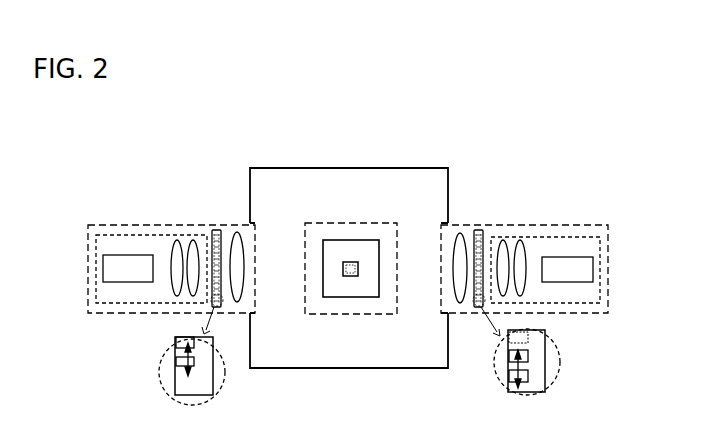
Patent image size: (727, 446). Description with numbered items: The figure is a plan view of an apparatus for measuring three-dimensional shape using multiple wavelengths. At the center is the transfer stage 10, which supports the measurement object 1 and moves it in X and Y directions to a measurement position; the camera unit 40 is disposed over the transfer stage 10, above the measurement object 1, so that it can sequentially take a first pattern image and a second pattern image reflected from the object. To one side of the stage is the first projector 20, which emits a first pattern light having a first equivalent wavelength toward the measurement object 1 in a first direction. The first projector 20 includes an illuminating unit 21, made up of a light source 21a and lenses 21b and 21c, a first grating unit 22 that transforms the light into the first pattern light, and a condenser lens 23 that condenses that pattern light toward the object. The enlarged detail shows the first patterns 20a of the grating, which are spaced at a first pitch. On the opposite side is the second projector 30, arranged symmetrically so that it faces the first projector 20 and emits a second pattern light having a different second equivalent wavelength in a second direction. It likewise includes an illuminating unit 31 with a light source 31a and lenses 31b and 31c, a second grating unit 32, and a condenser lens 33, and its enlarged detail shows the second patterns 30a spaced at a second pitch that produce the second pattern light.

The measurement object 1 is at (358, 298).
The transfer stage 10 is at (340, 366).
The first projector 20 is at (92, 317).
The first patterns 20a is at (176, 361).
The illuminating unit 21 is at (185, 190).
The light source 21a is at (115, 254).
The lens 21b is at (175, 242).
The lens 21c is at (193, 240).
The first grating unit 22 is at (218, 226).
The condenser lens 23 is at (239, 231).
The second projector 30 is at (590, 317).
The second patterns 30a is at (506, 374).
The illuminating unit 31 is at (605, 190).
The light source 31a is at (575, 256).
The lens 31b is at (520, 242).
The lens 31c is at (504, 240).
The second grating unit 32 is at (480, 228).
The condenser lens 33 is at (460, 231).
The camera unit 40 is at (363, 222).